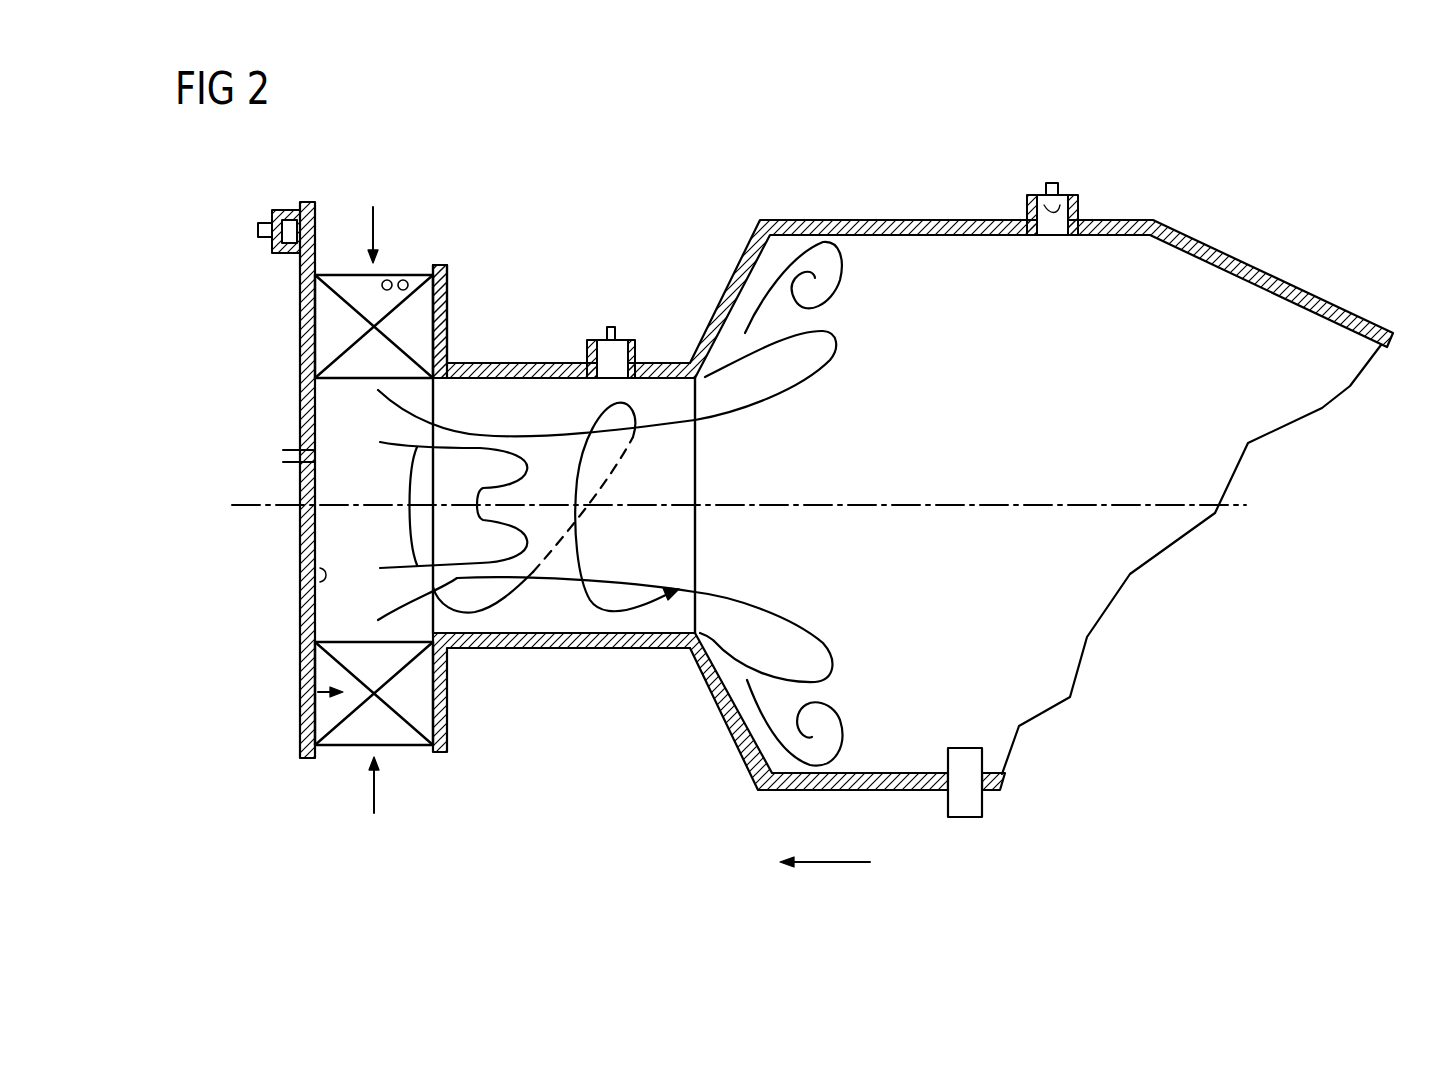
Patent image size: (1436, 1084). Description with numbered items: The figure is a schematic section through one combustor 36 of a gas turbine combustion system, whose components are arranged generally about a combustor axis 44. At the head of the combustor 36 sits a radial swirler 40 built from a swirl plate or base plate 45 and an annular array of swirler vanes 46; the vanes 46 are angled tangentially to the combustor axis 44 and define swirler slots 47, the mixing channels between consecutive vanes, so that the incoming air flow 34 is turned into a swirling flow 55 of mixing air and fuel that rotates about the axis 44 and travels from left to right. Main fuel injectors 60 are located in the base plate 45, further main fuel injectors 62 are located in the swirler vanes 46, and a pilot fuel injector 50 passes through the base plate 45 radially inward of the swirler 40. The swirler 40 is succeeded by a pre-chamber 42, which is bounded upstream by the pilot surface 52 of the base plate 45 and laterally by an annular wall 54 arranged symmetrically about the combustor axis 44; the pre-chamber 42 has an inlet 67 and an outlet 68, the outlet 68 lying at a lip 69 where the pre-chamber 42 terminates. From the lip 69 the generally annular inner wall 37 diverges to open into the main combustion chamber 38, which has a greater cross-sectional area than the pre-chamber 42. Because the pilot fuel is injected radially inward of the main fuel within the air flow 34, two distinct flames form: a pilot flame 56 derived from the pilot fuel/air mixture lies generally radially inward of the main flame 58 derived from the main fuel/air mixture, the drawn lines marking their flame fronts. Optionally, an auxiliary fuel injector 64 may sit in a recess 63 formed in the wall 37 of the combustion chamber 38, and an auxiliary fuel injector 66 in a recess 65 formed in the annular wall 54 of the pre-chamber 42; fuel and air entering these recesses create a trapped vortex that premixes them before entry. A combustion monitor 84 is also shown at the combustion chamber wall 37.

The air flow 34 is at (373, 220).
The combustor 36 is at (1288, 228).
The inner wall 37 is at (906, 790).
The main combustion chamber 38 is at (922, 314).
The radial swirler 40 is at (318, 692).
The pre-chamber 42 is at (587, 623).
The combustor axis 44 is at (262, 500).
The base plate 45 is at (307, 612).
The swirler vanes 46 is at (322, 675).
The swirler slots 47 is at (440, 326).
The pilot fuel injector 50 is at (283, 455).
The pilot surface 52 is at (322, 572).
The annular wall 54 is at (648, 645).
The swirling flow 55 is at (495, 605).
The pilot flame 56 is at (527, 453).
The main flame 58 is at (833, 343).
The main fuel injectors 60 is at (258, 230).
The main fuel injectors 62 is at (403, 279).
The recess 63 is at (1078, 205).
The auxiliary fuel injector 64 is at (1035, 205).
The recess 65 is at (635, 340).
The auxiliary fuel injector 66 is at (603, 348).
The inlet 67 is at (435, 413).
The outlet 68 is at (708, 380).
The lip 69 is at (703, 628).
The combustion monitor 84 is at (982, 800).